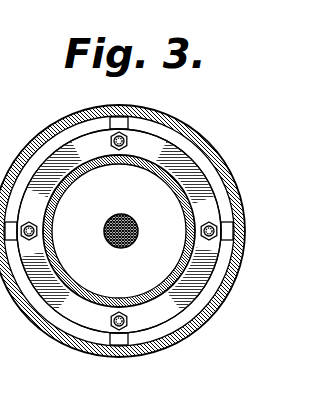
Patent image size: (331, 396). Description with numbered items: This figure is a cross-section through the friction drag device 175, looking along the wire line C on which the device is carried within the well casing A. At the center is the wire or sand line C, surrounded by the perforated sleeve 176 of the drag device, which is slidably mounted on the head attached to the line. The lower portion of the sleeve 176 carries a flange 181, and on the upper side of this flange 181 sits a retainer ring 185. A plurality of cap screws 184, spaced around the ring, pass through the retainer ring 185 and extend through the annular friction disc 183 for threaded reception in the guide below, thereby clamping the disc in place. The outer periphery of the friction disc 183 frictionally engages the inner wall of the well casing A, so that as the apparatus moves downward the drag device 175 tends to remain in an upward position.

The well casing A is at (152, 112).
The wire line C is at (124, 214).
The friction drag device 175 is at (158, 162).
The sleeve 176 is at (193, 201).
The flange 181 is at (188, 321).
The annular friction disc 183 is at (116, 344).
The cap screws 184 is at (123, 314).
The retainer ring 185 is at (72, 312).